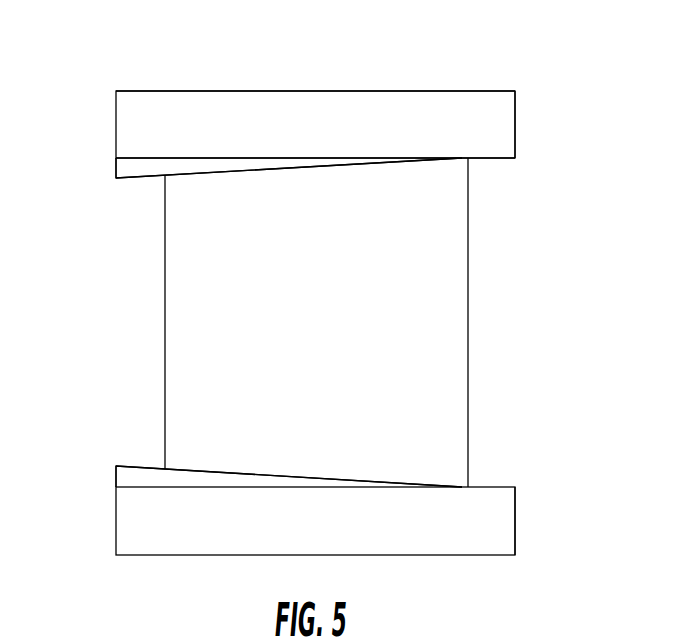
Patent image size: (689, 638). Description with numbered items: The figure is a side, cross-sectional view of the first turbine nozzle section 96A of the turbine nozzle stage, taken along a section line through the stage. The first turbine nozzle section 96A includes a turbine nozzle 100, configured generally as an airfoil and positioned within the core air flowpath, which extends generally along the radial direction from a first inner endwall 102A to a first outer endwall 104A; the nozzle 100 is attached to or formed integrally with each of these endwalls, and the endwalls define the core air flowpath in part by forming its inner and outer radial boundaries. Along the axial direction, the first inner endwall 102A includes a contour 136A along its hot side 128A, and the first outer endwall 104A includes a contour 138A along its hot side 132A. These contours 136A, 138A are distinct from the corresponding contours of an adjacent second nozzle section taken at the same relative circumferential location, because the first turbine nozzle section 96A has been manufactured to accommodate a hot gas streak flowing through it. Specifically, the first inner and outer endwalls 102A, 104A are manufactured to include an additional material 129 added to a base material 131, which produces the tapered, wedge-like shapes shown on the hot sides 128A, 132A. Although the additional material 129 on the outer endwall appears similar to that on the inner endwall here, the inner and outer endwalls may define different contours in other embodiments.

The first turbine nozzle section 96A is at (360, 63).
The turbine nozzle 100 is at (430, 323).
The first inner endwall 102A is at (222, 542).
The first outer endwall 104A is at (356, 118).
The hot side of first inner endwall 128A is at (155, 462).
The additional material 129 is at (141, 165).
The base material 131 is at (160, 113).
The hot side of first outer endwall 132A is at (187, 185).
The contour of first inner endwall 136A is at (283, 465).
The contour of first outer endwall 138A is at (295, 185).